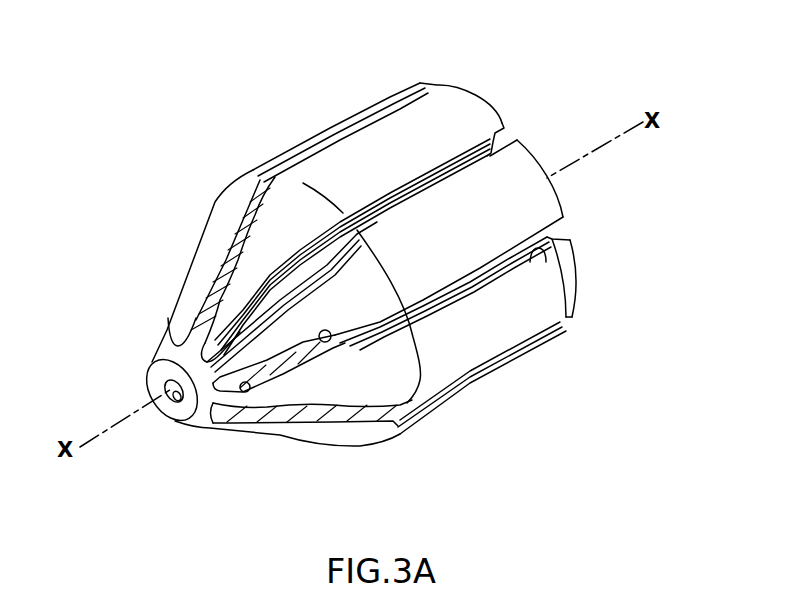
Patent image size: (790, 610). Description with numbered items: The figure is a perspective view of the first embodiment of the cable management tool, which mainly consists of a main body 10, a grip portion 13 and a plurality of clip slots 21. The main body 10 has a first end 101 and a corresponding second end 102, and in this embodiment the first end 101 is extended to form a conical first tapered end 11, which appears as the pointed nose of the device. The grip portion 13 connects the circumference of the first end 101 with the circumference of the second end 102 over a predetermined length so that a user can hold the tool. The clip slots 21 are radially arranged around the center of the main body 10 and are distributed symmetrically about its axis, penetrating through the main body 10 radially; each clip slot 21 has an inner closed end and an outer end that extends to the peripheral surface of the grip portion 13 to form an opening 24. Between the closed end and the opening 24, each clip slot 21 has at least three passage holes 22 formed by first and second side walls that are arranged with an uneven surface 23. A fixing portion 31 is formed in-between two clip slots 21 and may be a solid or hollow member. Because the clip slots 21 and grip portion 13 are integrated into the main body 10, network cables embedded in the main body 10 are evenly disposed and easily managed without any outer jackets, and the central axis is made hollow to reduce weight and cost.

The main body 10 is at (472, 82).
The first tapered end 11 is at (213, 405).
The grip portion 13 is at (395, 127).
The clip slots 21 is at (568, 320).
The passage holes 22 is at (246, 392).
The uneven surface 23 is at (333, 343).
The opening 24 is at (453, 296).
The fixing portion 31 is at (291, 178).
The first end 101 is at (413, 377).
The second end 102 is at (578, 268).